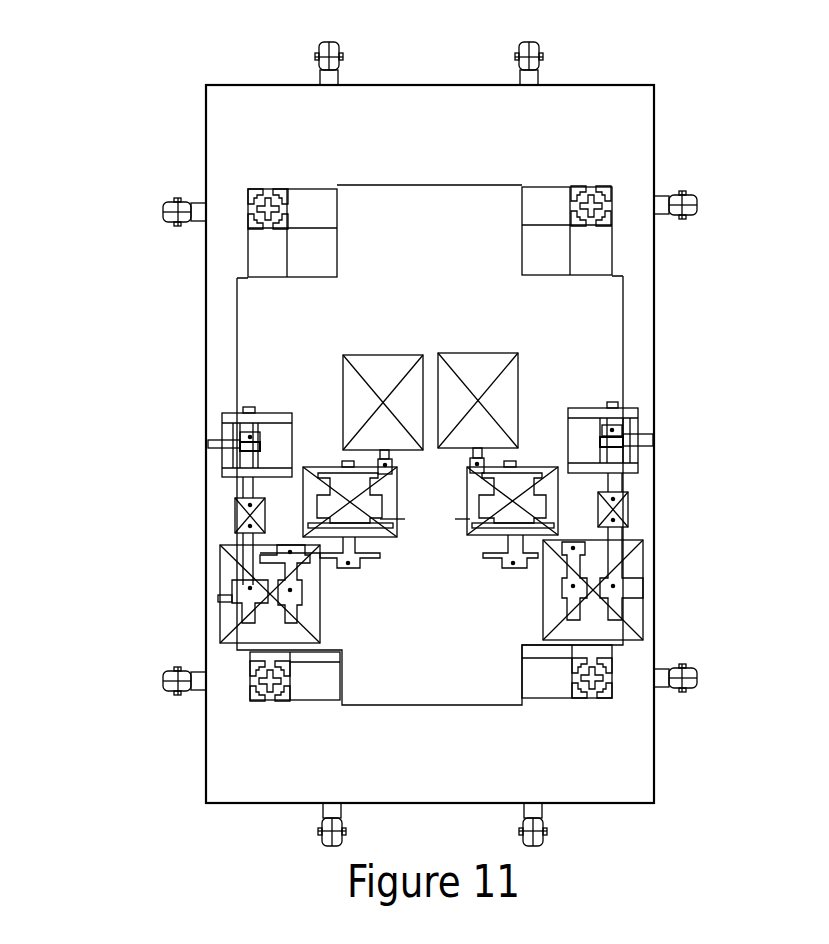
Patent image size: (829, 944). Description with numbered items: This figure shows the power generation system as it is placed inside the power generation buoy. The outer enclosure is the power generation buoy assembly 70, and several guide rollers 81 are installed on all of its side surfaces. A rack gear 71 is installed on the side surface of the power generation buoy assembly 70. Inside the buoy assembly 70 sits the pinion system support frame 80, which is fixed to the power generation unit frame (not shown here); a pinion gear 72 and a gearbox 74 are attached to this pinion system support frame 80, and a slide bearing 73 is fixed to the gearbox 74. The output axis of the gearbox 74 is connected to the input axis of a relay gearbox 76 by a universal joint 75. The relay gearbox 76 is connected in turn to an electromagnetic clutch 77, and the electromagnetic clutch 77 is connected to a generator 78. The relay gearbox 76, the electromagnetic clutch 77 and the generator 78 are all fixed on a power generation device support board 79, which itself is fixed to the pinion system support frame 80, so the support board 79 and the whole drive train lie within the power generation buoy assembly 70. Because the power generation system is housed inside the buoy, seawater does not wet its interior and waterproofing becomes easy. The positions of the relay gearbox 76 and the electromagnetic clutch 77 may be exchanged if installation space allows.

The power generation buoy assembly 70 is at (458, 408).
The rack gear 71 is at (505, 412).
The pinion gear 72 is at (430, 380).
The slide bearing 73 is at (486, 398).
The gearbox 74 is at (431, 375).
The universal joint 75 is at (493, 529).
The relay gearbox 76 is at (485, 591).
The electromagnetic clutch 77 is at (430, 520).
The generator 78 is at (430, 369).
The power generation device support board 79 is at (430, 420).
The pinion system support frame 80 is at (268, 655).
The guide roller 81 is at (490, 444).